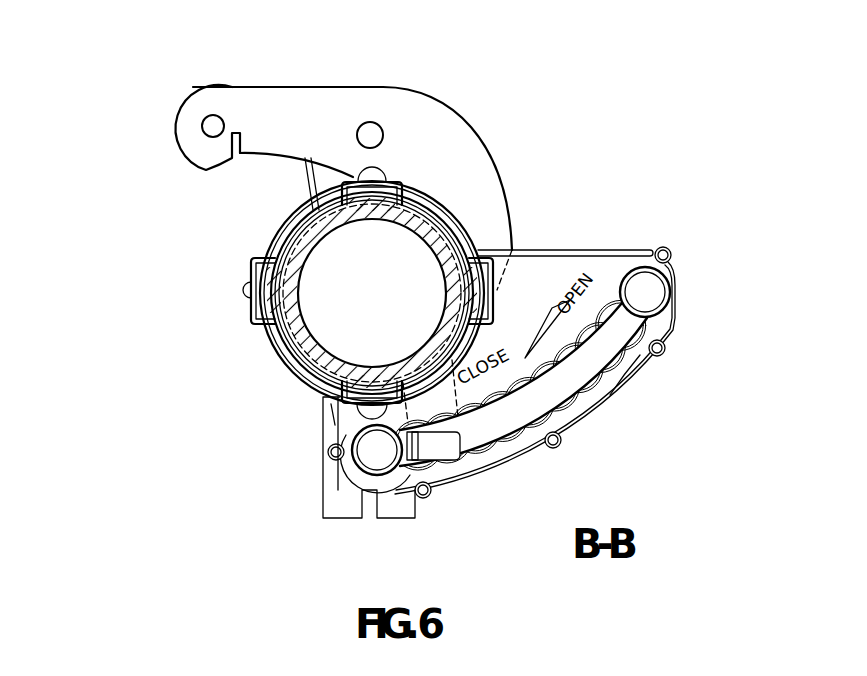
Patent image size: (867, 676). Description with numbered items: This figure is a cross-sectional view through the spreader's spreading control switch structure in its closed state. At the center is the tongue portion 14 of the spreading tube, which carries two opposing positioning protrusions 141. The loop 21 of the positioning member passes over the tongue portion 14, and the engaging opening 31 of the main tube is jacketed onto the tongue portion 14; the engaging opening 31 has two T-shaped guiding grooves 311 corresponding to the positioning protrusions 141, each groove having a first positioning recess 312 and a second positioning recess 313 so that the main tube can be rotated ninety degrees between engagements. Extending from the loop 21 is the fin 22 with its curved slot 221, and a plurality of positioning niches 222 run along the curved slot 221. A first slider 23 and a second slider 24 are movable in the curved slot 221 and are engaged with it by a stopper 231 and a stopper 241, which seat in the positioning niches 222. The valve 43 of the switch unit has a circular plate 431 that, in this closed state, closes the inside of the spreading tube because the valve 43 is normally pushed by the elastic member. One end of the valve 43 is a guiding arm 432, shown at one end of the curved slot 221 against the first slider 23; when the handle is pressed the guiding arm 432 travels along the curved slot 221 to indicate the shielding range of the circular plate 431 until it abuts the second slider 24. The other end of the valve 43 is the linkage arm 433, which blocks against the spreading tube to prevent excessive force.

The tongue portion 14 is at (313, 226).
The positioning protrusion 141 is at (280, 290).
The loop 21 is at (275, 242).
The fin 22 is at (522, 326).
The curved slot 221 is at (568, 385).
The positioning niches 222 is at (617, 372).
The first slider 23 is at (373, 455).
The stopper 231 is at (327, 500).
The second slider 24 is at (702, 330).
The stopper 241 is at (645, 292).
The engaging opening 31 is at (303, 400).
The guiding grooves 311 is at (282, 380).
The first positioning recess 312 is at (277, 303).
The second positioning recess 313 is at (367, 197).
The valve 43 is at (318, 234).
The circular plate 431 is at (417, 267).
The guiding arm 432 is at (440, 462).
The linkage arm 433 is at (205, 105).